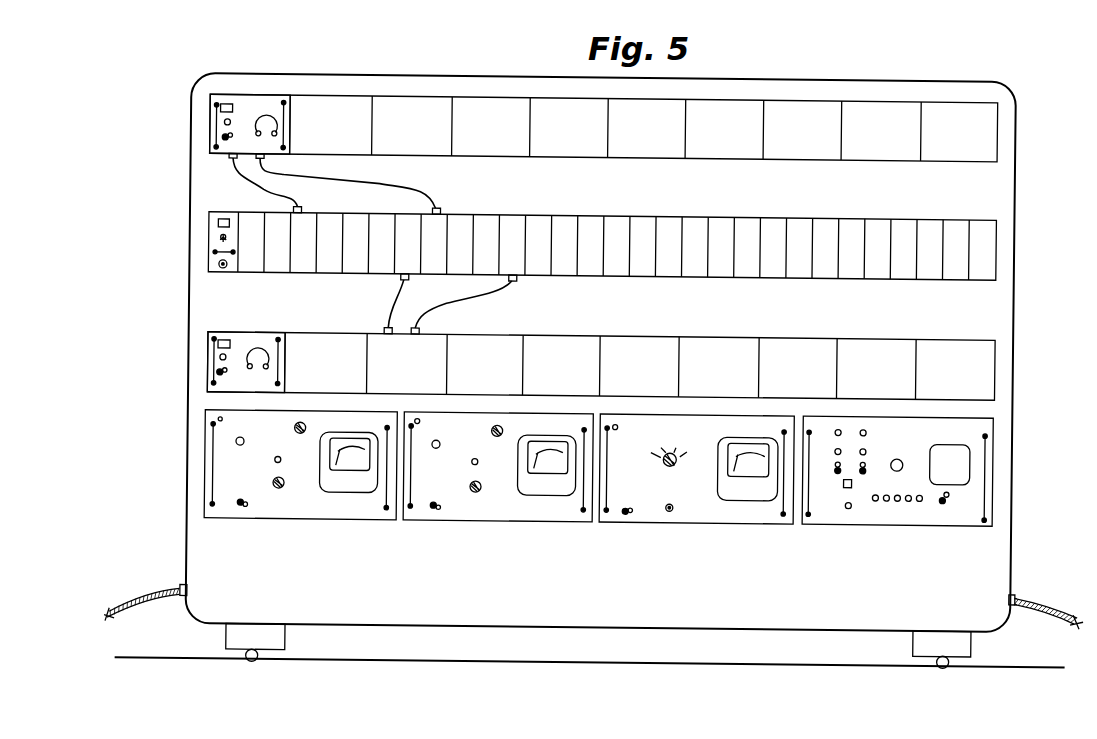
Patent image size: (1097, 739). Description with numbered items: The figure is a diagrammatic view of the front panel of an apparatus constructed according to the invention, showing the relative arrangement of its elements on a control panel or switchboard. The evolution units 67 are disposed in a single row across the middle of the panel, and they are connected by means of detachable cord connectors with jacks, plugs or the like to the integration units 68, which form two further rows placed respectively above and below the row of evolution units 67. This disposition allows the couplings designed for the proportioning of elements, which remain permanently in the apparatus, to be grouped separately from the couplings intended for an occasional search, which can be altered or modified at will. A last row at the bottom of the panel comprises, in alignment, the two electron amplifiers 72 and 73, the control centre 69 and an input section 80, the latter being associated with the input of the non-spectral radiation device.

The evolution units 67 is at (252, 269).
The integration units 68 is at (246, 107).
The control centre 69 is at (694, 511).
The electron amplifier 72 is at (302, 515).
The electron amplifier 73 is at (483, 513).
The input section 80 is at (842, 512).